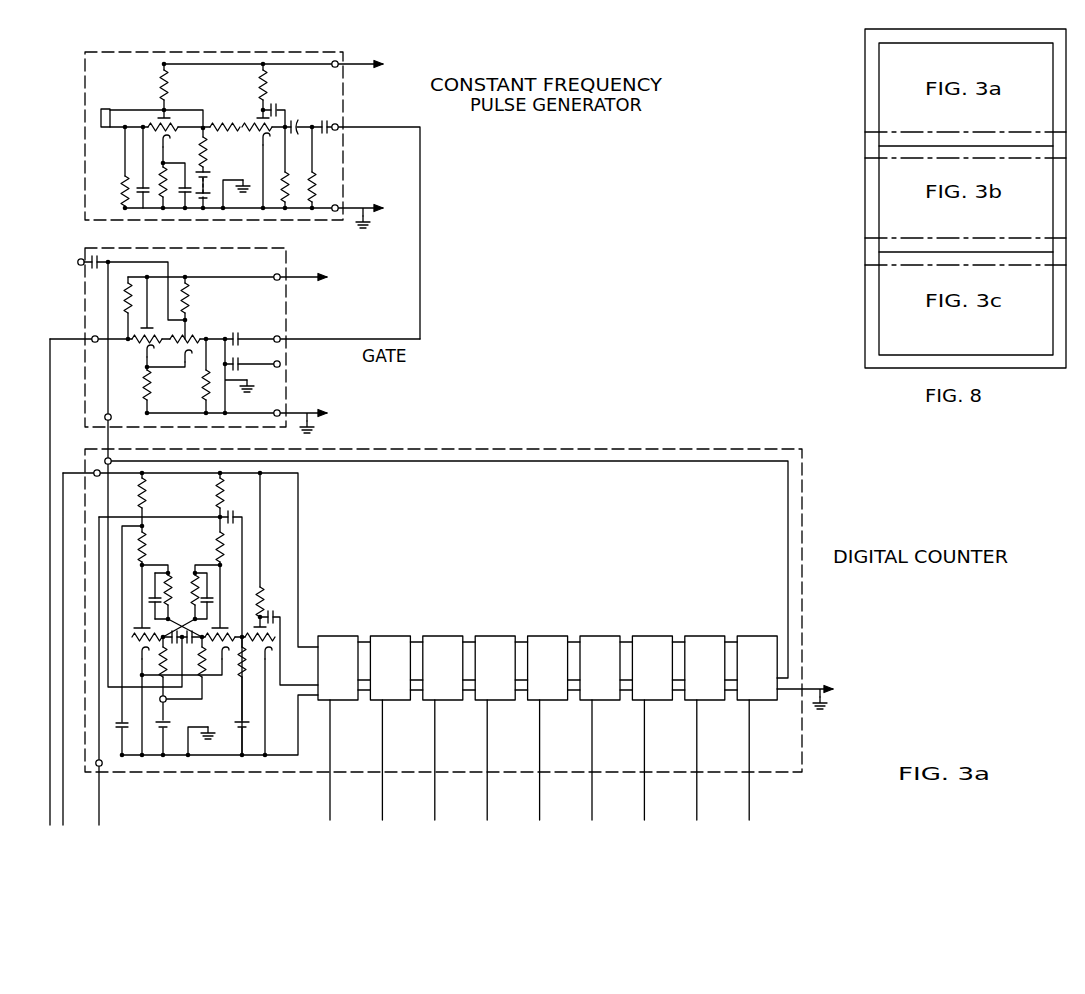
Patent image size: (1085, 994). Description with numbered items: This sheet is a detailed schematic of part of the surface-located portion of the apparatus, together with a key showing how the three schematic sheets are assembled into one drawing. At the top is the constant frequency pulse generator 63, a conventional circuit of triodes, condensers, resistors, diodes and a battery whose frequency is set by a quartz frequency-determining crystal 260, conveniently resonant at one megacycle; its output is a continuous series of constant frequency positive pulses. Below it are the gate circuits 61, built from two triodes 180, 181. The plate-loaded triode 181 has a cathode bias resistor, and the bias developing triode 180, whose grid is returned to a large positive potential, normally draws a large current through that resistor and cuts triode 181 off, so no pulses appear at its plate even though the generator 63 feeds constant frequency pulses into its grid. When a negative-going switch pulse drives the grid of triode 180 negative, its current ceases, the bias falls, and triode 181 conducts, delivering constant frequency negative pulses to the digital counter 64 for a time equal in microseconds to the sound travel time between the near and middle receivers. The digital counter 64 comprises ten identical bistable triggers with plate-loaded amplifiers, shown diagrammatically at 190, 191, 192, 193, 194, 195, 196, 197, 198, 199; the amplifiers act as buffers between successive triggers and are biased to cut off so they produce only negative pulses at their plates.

The constant frequency pulse generator 63 is at (254, 195).
The quartz frequency-determining crystal 260 is at (99, 122).
The gate circuits 61 is at (235, 340).
The bias developing triode 180 is at (146, 345).
The plate-loaded triode 181 is at (196, 332).
The digital counter 64 is at (468, 582).
The bistable trigger and associated amplifier 190 is at (191, 502).
The bistable trigger and associated amplifier 191 is at (338, 728).
The bistable trigger and associated amplifier 192 is at (390, 728).
The bistable trigger and associated amplifier 193 is at (443, 728).
The bistable trigger and associated amplifier 194 is at (495, 728).
The bistable trigger and associated amplifier 195 is at (548, 728).
The bistable trigger and associated amplifier 196 is at (600, 728).
The bistable trigger and associated amplifier 197 is at (652, 728).
The bistable trigger and associated amplifier 198 is at (705, 728).
The bistable trigger and associated amplifier 199 is at (757, 728).